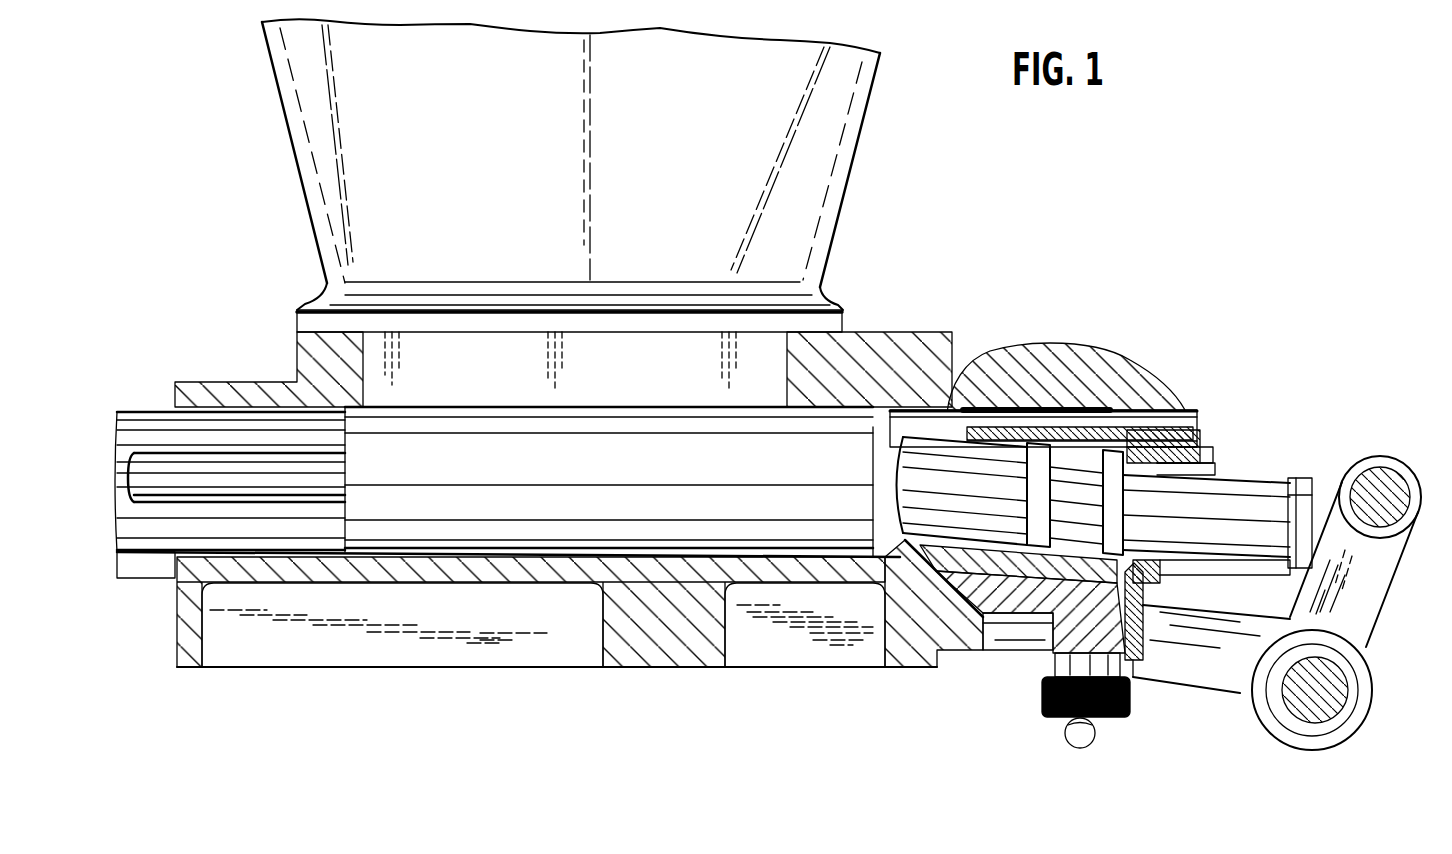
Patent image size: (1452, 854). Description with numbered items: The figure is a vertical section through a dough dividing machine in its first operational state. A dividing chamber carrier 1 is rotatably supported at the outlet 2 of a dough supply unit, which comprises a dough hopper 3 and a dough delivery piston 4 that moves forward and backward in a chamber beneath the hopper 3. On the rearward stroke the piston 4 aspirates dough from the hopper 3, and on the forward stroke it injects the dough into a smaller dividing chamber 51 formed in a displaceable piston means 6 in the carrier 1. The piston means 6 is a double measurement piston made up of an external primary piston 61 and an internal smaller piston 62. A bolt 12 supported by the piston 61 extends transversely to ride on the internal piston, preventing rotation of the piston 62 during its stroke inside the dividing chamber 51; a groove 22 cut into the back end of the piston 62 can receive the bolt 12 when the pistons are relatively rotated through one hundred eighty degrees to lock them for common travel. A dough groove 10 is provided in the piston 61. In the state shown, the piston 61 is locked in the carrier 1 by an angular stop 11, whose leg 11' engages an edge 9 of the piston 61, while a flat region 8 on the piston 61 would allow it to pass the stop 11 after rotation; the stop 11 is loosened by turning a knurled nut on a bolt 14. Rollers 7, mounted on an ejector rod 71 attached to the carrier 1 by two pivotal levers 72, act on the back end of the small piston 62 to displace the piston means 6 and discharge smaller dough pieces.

The dividing chamber carrier 1 is at (1040, 366).
The outlet 2 is at (868, 530).
The dough hopper 3 is at (840, 100).
The dough delivery piston 4 is at (525, 512).
The piston means 6 is at (1222, 471).
The rollers 7 is at (1355, 460).
The flat region 8 is at (1203, 444).
The edge 9 is at (1145, 578).
The dough groove 10 is at (935, 470).
The angular stop 11 is at (1056, 665).
The leg 11' is at (1252, 662).
The bolt 12 is at (1180, 455).
The bolt 14 is at (1063, 740).
The groove 22 is at (1265, 548).
The dividing chamber 51 is at (922, 410).
The external primary piston 61 is at (1160, 462).
The internal smaller piston 62 is at (1210, 540).
The ejector rod 71 is at (1383, 458).
The pivotal levers 72 is at (1370, 573).